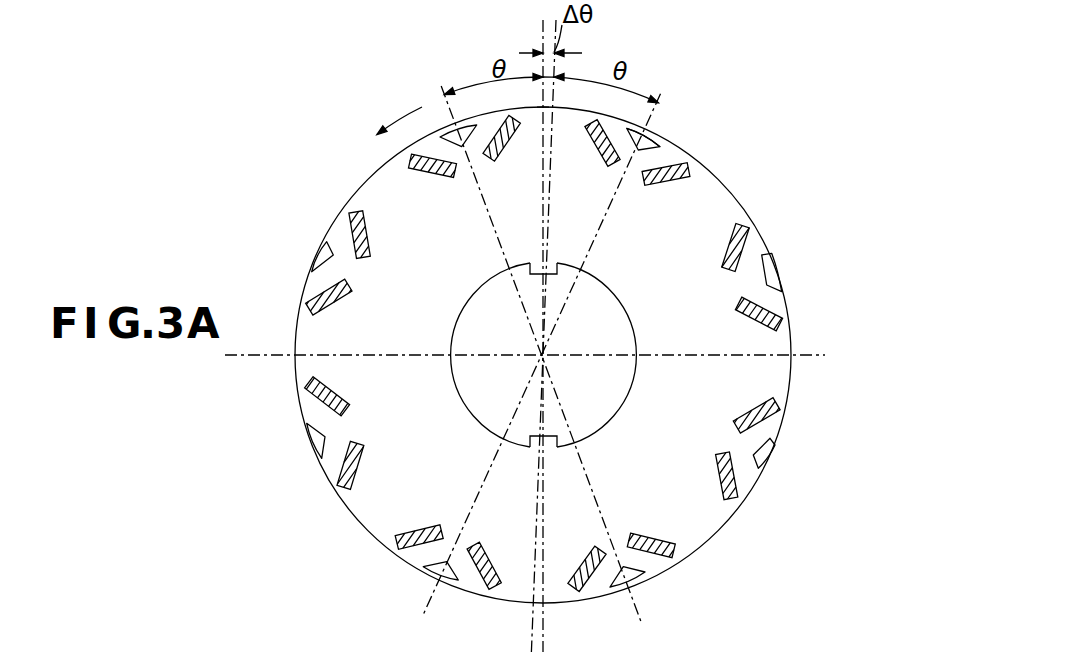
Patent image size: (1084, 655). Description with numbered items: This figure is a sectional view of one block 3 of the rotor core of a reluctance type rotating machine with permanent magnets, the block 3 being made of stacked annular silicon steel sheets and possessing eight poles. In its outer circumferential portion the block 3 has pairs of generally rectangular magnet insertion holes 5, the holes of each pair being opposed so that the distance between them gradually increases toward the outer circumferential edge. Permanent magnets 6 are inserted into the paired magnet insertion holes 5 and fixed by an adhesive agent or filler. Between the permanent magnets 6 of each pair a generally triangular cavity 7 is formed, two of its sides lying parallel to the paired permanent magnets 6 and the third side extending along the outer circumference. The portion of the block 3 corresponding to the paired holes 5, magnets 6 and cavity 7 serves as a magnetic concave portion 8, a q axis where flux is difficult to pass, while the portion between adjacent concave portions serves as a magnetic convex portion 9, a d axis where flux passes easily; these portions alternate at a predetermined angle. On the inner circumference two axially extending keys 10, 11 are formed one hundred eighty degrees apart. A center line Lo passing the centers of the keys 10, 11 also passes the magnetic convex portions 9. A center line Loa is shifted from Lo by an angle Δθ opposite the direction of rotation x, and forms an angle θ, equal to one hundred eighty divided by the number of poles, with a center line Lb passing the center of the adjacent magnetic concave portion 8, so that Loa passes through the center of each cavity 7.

The block 3 is at (700, 524).
The magnet insertion hole 5 is at (593, 135).
The permanent magnet 6 is at (613, 164).
The cavity 7 is at (661, 140).
The magnetic concave portion 8 is at (438, 135).
The magnetic convex portion 9 is at (537, 107).
The key 10 is at (556, 276).
The key 11 is at (556, 435).
The center line Lo is at (543, 52).
The center line Loa is at (556, 57).
The center line Lb is at (656, 103).
The rotation direction x is at (403, 119).